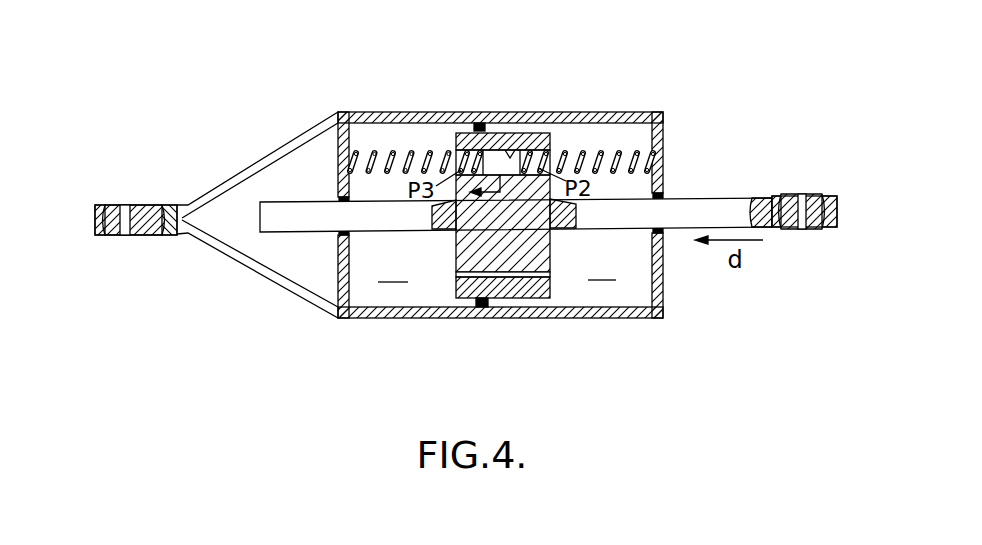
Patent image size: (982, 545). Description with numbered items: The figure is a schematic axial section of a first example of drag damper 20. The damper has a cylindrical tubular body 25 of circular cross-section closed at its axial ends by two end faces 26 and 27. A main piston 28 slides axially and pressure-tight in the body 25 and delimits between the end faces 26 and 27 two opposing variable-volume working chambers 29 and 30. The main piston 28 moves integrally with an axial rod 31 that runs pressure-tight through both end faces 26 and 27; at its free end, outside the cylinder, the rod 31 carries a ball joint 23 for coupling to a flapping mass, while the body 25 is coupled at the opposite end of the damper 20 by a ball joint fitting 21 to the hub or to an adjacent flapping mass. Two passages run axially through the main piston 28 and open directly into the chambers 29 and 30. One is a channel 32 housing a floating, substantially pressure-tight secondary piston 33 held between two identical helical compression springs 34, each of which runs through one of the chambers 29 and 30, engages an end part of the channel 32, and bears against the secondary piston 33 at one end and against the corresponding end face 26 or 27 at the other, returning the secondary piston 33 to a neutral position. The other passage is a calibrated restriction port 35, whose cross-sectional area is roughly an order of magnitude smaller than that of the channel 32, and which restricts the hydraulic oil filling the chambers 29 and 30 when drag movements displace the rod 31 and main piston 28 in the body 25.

The drag damper 20 is at (453, 249).
The ball joint fitting 21 is at (150, 205).
The ball joint 23 is at (815, 198).
The cylindrical tubular body 25 is at (418, 316).
The end face 26 is at (657, 280).
The end face 27 is at (344, 277).
The main piston 28 is at (544, 290).
The working chamber 29 is at (641, 297).
The working chamber 30 is at (387, 300).
The axial rod 31 is at (708, 214).
The channel 32 is at (522, 150).
The secondary piston 33 is at (506, 222).
The helical compression spring 34 is at (388, 153).
The restriction port 35 is at (521, 277).